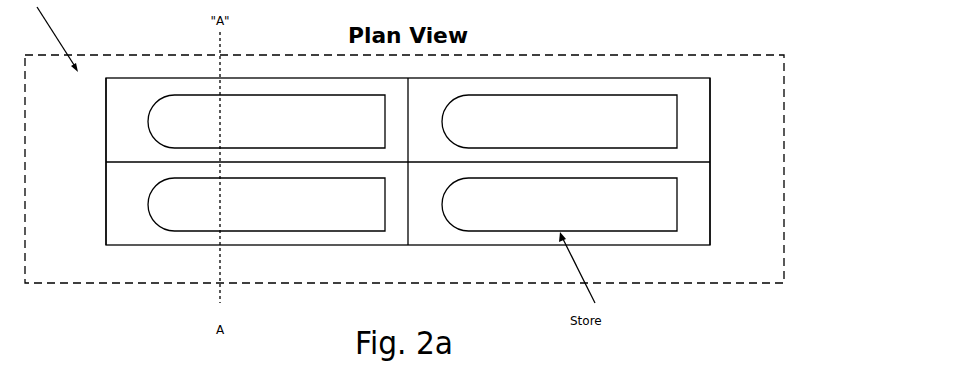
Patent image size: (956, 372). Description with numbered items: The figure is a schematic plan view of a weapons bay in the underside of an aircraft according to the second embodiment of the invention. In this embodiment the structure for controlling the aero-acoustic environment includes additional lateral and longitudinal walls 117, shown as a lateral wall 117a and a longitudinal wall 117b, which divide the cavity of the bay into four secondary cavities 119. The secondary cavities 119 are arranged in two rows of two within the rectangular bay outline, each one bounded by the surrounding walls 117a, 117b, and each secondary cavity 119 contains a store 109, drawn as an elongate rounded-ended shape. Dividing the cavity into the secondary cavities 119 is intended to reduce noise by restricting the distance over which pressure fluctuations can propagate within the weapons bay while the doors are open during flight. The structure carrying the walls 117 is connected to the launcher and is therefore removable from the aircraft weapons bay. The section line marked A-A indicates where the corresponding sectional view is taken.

The store 109 is at (307, 130).
The secondary cavity 119 is at (385, 93).
The lateral and longitudinal walls 117 is at (446, 236).
The lateral wall 117a is at (93, 129).
The longitudinal wall 117b is at (683, 170).